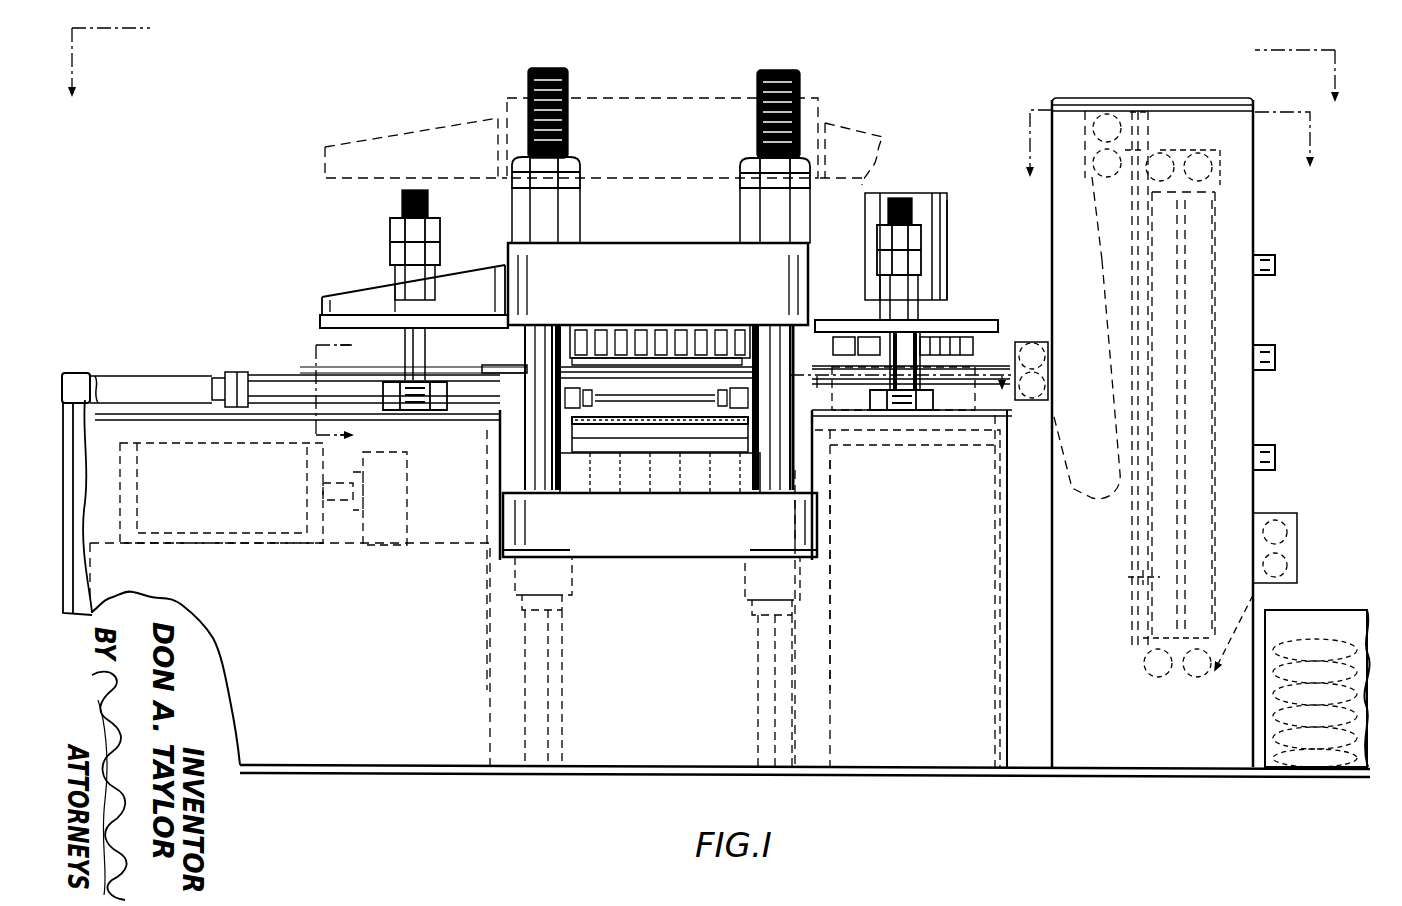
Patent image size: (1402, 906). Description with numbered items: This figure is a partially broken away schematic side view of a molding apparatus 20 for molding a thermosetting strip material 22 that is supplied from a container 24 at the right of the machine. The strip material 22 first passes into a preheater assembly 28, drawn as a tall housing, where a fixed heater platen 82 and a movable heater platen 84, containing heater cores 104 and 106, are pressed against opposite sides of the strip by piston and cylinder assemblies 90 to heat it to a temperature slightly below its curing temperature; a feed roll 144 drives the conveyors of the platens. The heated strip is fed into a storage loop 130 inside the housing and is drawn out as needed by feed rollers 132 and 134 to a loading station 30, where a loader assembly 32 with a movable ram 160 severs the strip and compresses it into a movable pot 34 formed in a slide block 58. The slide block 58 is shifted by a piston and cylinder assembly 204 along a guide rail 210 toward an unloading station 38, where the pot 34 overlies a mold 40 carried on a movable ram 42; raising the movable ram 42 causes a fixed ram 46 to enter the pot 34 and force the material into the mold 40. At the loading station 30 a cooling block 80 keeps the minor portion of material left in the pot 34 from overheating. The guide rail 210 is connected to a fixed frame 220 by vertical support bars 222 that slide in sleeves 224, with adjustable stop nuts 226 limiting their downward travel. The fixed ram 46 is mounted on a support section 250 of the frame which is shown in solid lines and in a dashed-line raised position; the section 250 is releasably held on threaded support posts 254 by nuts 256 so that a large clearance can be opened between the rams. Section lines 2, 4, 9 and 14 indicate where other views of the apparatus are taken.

The section line 2- 2 is at (701, 81).
The section line 4- 4 is at (1162, 156).
The section line 9- 9 is at (901, 396).
The section line 14- 14 is at (353, 389).
The molding apparatus 20 is at (195, 240).
The thermosetting strip material 22 is at (1105, 302).
The container 24 is at (1263, 735).
The preheater assembly 28 is at (1082, 98).
The loading station 30 is at (905, 190).
The loader assembly 32 is at (947, 195).
The movable pot 34 is at (863, 424).
The unloading or discharge station 38 is at (682, 92).
The mold 40 is at (607, 458).
The movable ram 42 is at (660, 462).
The fixed ram 46 is at (632, 330).
The slide block 58 is at (507, 366).
The cooling block 80 is at (806, 422).
The fixed heater platen 82 is at (1152, 678).
The movable heater platen 84 is at (1193, 680).
The piston and cylinder assemblies 90 is at (1270, 278).
The heater core 104 is at (1128, 581).
The heater core 106 is at (1195, 489).
The storage loop 130 is at (1070, 494).
The feed roller 132 is at (1049, 356).
The feed roller 134 is at (1049, 387).
The feed roll 144 is at (1148, 128).
The movable ram 160 is at (973, 348).
The piston and cylinder assembly 204 is at (115, 365).
The guide rail 210 is at (298, 376).
The fixed frame 220 is at (500, 232).
The vertical support bars 222 is at (385, 326).
The sleeves 224 is at (396, 278).
The adjustable stop nuts 226 is at (400, 248).
The support section 250 is at (645, 109).
The support columns or posts 254 is at (548, 67).
The nuts 256 is at (580, 169).